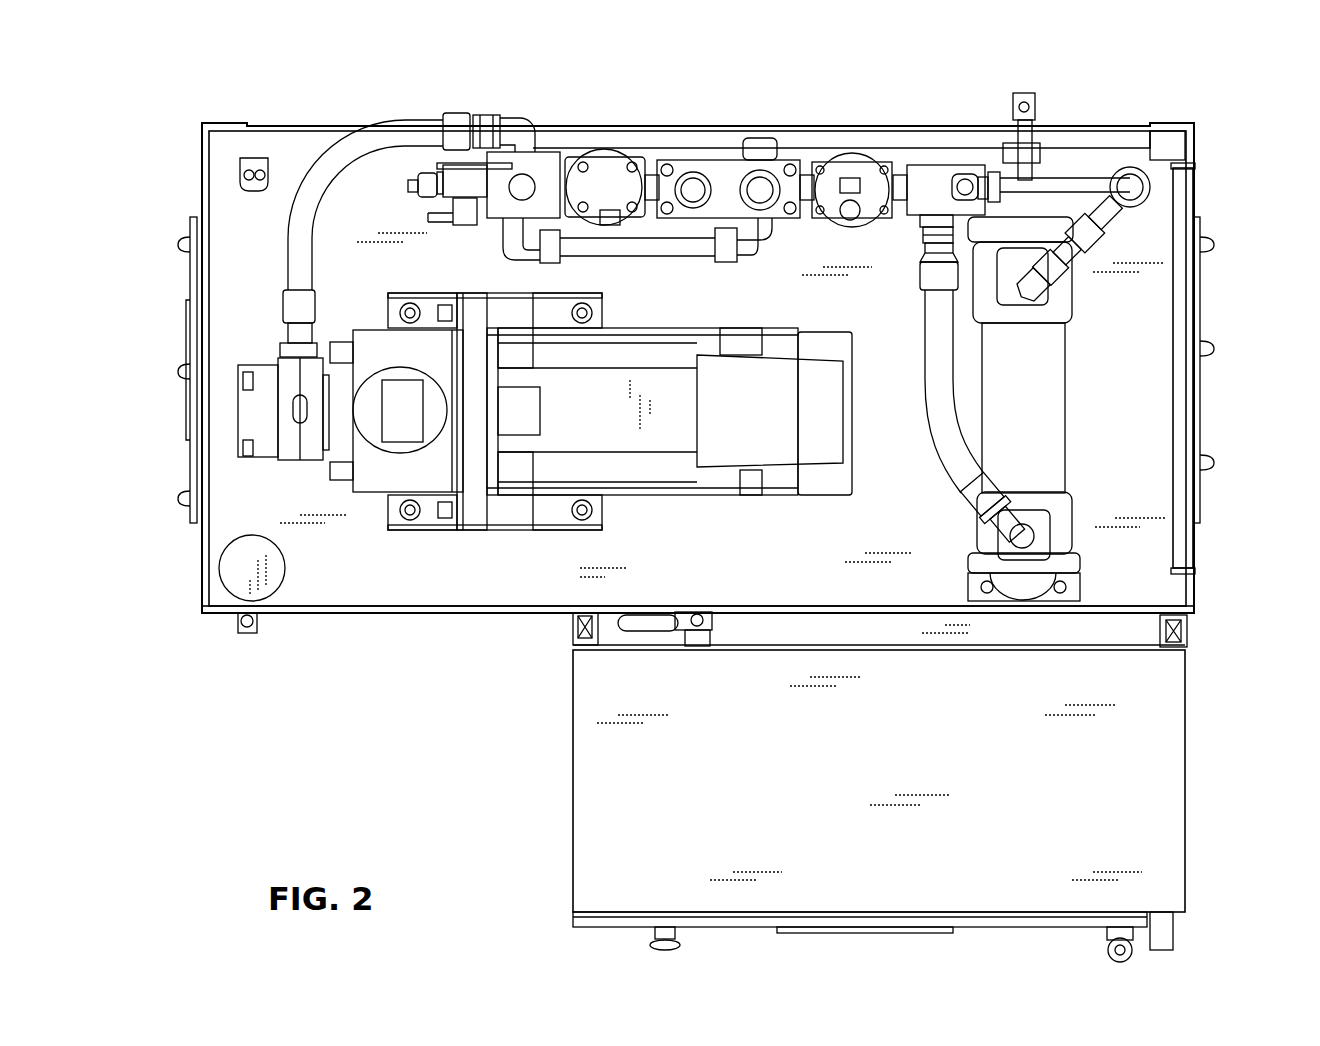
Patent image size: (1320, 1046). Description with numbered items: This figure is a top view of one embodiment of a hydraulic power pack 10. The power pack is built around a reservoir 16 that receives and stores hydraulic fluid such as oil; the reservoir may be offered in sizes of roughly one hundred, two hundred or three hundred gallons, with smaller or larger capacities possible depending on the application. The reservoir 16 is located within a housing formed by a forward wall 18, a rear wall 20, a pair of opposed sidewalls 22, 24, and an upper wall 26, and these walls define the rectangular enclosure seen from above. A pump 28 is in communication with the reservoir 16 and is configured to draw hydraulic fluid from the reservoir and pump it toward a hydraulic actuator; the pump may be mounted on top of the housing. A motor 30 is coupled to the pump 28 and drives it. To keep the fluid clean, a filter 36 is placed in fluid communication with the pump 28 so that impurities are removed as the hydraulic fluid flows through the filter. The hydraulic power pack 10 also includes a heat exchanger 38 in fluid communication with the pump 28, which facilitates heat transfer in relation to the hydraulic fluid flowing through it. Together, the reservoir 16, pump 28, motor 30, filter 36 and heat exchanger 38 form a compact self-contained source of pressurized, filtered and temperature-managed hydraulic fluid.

The hydraulic power pack 10 is at (262, 93).
The reservoir 16 is at (1207, 436).
The forward wall 18 is at (337, 615).
The rear wall 20 is at (1095, 127).
The sidewall 22 is at (201, 568).
The sidewall 24 is at (1200, 548).
The upper wall 26 is at (1140, 352).
The pump 28 is at (237, 411).
The motor 30 is at (663, 498).
The filter 36 is at (606, 152).
The heat exchanger 38 is at (1057, 432).